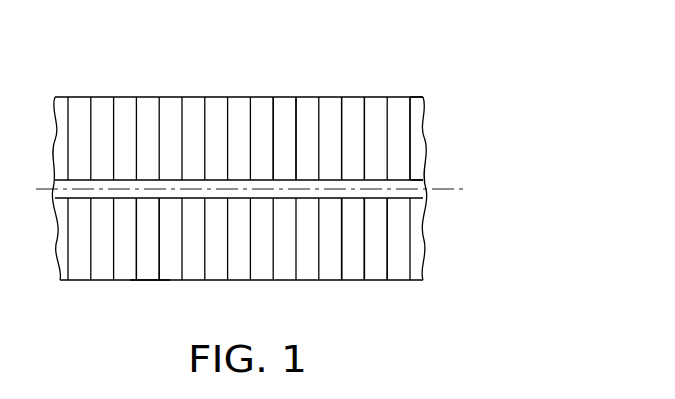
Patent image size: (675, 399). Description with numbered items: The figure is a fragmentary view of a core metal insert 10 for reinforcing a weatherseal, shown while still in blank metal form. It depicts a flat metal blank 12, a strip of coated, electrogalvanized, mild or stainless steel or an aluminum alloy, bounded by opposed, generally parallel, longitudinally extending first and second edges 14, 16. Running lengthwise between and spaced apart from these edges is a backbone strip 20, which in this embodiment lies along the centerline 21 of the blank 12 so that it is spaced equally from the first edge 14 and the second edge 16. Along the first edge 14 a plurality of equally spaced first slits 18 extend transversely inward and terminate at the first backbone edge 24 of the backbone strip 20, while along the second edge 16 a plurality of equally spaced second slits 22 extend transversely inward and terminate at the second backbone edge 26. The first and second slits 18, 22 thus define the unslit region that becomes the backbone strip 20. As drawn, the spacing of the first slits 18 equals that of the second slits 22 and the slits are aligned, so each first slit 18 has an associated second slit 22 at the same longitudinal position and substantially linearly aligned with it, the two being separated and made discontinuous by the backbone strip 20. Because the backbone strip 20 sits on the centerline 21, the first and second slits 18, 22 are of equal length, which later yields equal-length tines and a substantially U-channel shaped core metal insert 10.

The core metal insert 10 is at (220, 75).
The metal blank 12 is at (149, 291).
The first edge 14 is at (108, 280).
The second edge 16 is at (125, 97).
The first slits 18 is at (343, 267).
The backbone strip 20 is at (402, 185).
The centerline 21 is at (450, 185).
The second slits 22 is at (310, 92).
The first backbone edge 24 is at (353, 198).
The second backbone edge 26 is at (352, 178).